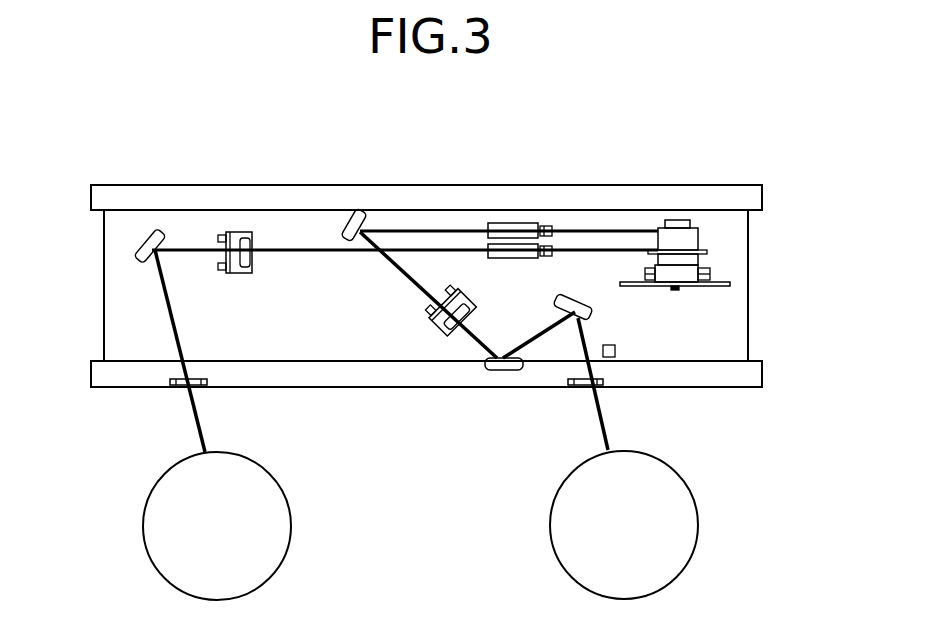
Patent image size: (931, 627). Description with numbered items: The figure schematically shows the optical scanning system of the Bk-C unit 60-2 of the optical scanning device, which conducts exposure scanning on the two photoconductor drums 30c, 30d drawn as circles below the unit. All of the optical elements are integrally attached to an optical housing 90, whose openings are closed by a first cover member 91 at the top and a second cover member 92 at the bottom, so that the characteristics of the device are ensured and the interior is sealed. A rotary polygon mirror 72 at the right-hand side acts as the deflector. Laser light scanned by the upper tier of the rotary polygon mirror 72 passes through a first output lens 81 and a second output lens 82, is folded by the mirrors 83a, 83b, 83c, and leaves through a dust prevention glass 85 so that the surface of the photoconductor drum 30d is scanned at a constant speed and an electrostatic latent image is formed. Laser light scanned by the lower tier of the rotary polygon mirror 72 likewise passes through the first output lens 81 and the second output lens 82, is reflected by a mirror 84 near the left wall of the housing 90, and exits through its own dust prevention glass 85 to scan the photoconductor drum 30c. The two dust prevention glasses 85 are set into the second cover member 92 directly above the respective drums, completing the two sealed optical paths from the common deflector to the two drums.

The photoconductor drum 30c is at (275, 534).
The photoconductor drum 30d is at (690, 535).
The Bk-C unit 60-2 is at (426, 295).
The rotary polygon mirror 72 is at (681, 220).
The first output lens 81 is at (533, 223).
The second output lens 82 is at (237, 235).
The mirror 83a is at (358, 213).
The mirror 83b is at (498, 372).
The mirror 83c is at (585, 293).
The mirror 84 is at (150, 238).
The dust prevention glass 85 is at (173, 386).
The optical housing 90 is at (315, 347).
The first cover member 91 is at (398, 200).
The second cover member 92 is at (393, 372).